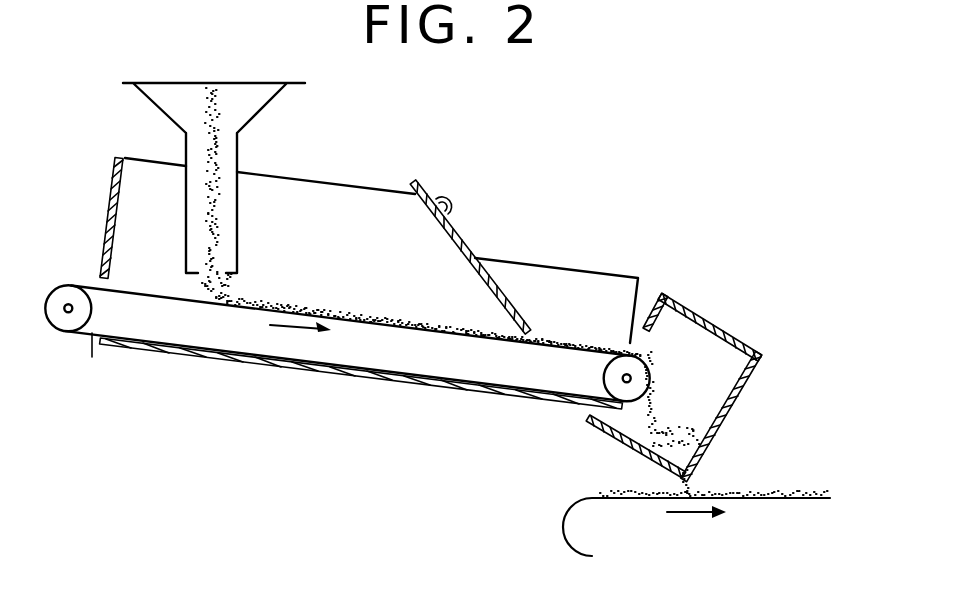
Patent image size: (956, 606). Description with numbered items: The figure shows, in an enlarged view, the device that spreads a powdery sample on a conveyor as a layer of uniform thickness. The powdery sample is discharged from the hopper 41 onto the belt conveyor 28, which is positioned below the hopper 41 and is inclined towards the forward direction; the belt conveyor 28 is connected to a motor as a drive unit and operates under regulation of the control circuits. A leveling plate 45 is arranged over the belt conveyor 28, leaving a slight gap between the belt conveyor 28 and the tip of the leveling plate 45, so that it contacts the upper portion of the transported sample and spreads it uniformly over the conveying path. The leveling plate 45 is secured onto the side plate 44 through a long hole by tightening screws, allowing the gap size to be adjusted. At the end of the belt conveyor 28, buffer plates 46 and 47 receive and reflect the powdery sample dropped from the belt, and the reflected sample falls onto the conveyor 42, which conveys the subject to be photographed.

The hopper 41 is at (243, 112).
The belt conveyor 28 is at (160, 293).
The side plate 44 is at (473, 293).
The leveling plate 45 is at (465, 243).
The buffer plate 47 is at (737, 407).
The buffer plate 46 is at (618, 435).
The conveyor 42 is at (772, 500).